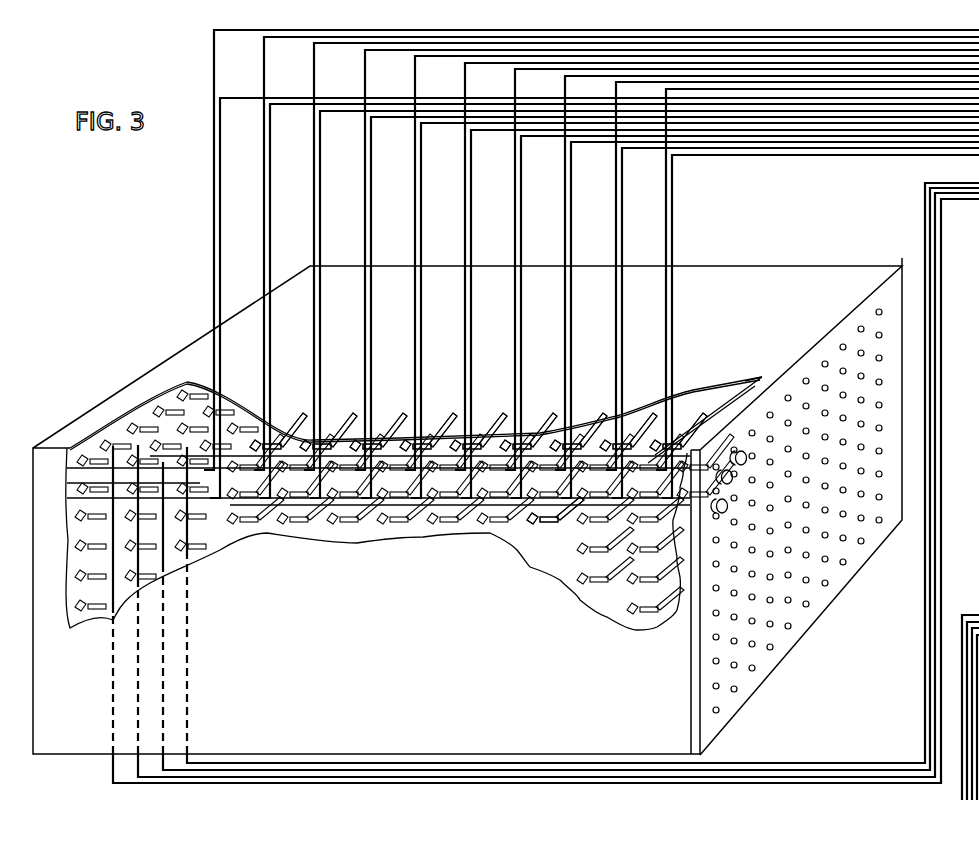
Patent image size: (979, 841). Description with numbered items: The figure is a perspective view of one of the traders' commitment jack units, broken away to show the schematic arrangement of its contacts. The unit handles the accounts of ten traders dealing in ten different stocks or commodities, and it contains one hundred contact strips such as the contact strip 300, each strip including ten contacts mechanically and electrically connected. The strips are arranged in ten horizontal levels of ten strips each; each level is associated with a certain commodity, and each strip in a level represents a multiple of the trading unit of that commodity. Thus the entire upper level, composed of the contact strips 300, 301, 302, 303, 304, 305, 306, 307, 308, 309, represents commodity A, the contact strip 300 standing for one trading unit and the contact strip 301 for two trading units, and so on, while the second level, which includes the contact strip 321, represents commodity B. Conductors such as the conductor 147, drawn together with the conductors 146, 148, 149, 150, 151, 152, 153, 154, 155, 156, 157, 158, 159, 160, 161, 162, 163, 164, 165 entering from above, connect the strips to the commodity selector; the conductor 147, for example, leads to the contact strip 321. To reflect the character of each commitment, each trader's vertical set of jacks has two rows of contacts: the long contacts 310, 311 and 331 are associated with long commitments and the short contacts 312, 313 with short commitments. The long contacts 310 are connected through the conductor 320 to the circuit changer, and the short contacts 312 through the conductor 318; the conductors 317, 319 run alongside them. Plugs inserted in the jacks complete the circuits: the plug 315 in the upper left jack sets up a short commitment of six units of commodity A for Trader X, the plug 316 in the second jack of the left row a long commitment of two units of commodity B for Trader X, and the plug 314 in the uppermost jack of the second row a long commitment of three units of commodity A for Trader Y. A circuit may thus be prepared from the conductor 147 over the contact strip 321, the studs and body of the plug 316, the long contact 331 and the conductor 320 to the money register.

The column lead 146 is at (672, 172).
The conductor 147 is at (622, 172).
The column lead 148 is at (571, 172).
The column lead 149 is at (521, 172).
The column lead 150 is at (471, 172).
The column lead 151 is at (421, 172).
The column lead 152 is at (371, 172).
The column lead 153 is at (320, 172).
The column lead 154 is at (270, 172).
The column lead 155 is at (220, 172).
The column lead 156 is at (666, 191).
The column lead 157 is at (616, 191).
The column lead 158 is at (565, 191).
The column lead 159 is at (515, 191).
The column lead 160 is at (465, 191).
The column lead 161 is at (415, 191).
The column lead 162 is at (365, 191).
The column lead 163 is at (314, 191).
The column lead 164 is at (264, 191).
The column lead 165 is at (214, 191).
The contact strip 300 is at (730, 394).
The contact strip 301 is at (643, 425).
The contact strip 302 is at (590, 430).
The contact strip 303 is at (538, 433).
The contact strip 304 is at (488, 433).
The contact strip 305 is at (438, 433).
The contact strip 306 is at (388, 433).
The contact strip 307 is at (340, 433).
The contact strip 308 is at (296, 426).
The contact strip 309 is at (255, 430).
The long contact 310 is at (67, 468).
The long contact 311 is at (140, 452).
The short contact 312 is at (110, 463).
The short contact 313 is at (170, 443).
The long contact 331 is at (67, 483).
The plug 314 is at (734, 448).
The plug 315 is at (729, 469).
The plug 316 is at (721, 499).
The row lead 317 is at (927, 437).
The conductor 318 is at (932, 452).
The row lead 319 is at (937, 465).
The conductor 320 is at (942, 477).
The contact strip 321 is at (518, 543).